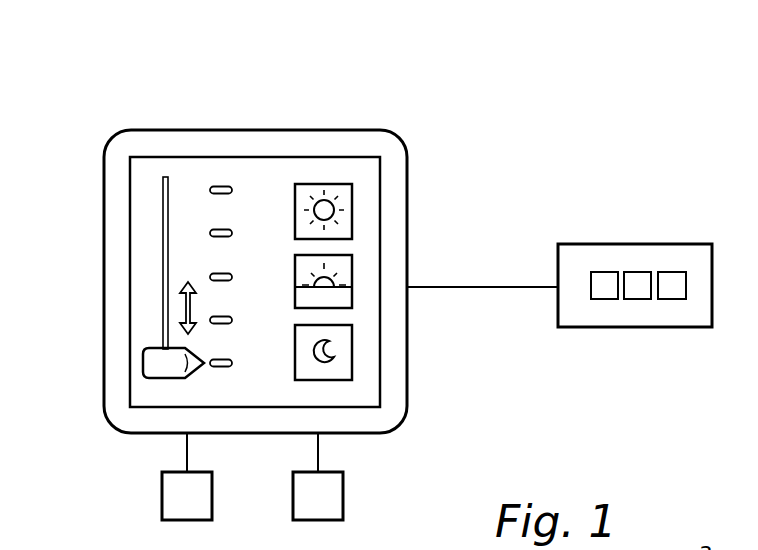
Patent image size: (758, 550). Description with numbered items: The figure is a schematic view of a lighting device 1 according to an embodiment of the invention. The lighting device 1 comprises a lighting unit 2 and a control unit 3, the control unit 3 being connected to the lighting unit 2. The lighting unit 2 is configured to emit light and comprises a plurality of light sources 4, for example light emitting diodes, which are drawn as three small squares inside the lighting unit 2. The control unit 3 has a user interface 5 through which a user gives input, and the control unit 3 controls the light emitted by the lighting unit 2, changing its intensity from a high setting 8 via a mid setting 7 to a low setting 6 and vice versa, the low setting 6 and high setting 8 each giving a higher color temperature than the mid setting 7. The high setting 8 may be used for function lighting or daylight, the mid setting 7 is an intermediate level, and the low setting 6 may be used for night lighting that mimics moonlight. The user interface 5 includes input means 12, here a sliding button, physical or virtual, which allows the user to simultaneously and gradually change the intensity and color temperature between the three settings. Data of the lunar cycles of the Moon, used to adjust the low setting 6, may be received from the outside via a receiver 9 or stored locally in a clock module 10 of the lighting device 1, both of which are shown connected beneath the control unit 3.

The lighting device 1 is at (519, 107).
The lighting unit 2 is at (690, 244).
The control unit 3 is at (298, 129).
The light sources 4 is at (605, 300).
The user interface 5 is at (147, 314).
The low setting 6 is at (353, 373).
The mid setting 7 is at (353, 298).
The high setting 8 is at (353, 209).
The receiver 9 is at (187, 496).
The clock module 10 is at (318, 496).
The input means 12 is at (145, 363).